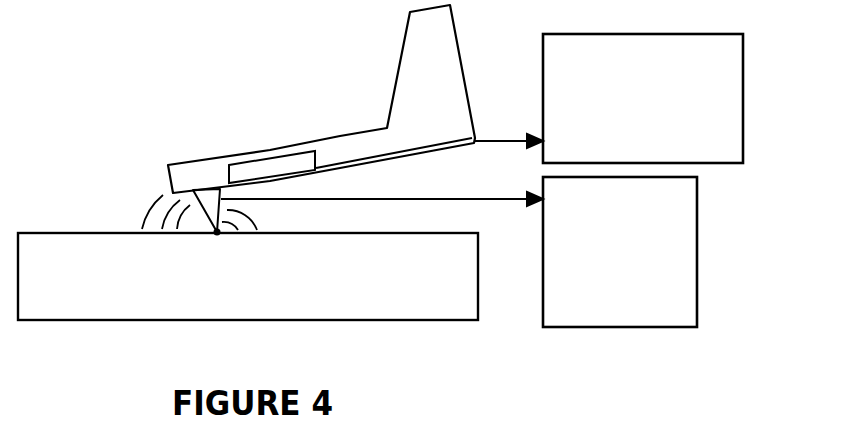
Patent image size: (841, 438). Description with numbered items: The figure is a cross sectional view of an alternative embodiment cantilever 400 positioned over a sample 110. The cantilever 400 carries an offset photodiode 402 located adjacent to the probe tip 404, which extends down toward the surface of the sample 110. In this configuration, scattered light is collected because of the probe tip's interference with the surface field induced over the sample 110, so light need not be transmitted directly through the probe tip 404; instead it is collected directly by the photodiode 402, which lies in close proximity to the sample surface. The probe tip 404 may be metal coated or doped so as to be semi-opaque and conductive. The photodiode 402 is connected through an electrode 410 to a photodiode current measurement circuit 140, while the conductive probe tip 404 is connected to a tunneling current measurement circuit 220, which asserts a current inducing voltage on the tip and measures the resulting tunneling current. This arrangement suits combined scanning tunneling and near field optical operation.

The cantilever 400 is at (453, 111).
The offset photodiode 402 is at (265, 158).
The probe tip 404 is at (208, 206).
The electrode 410 is at (402, 156).
The sample 110 is at (407, 301).
The photodiode current measurement circuit 140 is at (728, 148).
The tunneling current measurement circuit 220 is at (685, 315).